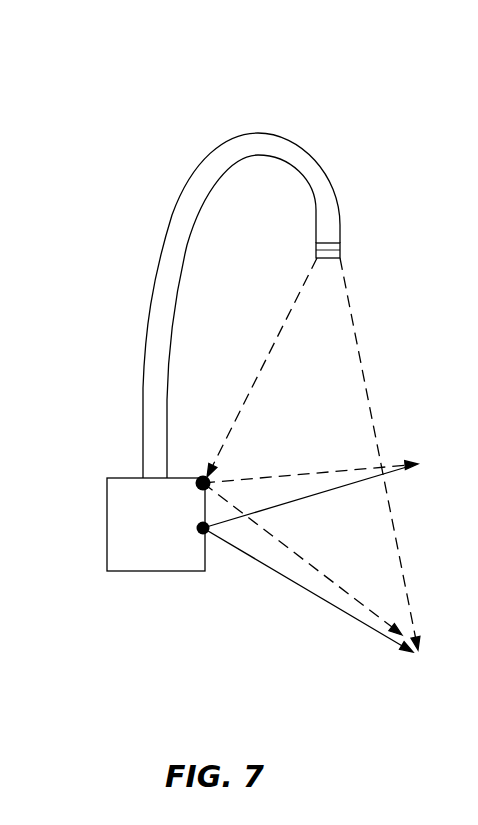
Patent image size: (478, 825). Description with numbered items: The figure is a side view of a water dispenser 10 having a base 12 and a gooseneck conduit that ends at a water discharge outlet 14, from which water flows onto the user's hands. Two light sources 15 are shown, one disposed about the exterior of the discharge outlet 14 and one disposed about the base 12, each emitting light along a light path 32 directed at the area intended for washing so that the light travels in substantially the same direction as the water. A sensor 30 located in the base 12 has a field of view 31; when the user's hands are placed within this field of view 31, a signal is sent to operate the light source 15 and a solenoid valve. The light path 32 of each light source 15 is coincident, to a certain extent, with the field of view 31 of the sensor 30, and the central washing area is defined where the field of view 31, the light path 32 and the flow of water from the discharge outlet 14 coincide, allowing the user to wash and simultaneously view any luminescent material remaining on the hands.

The water dispenser 10 is at (160, 120).
The base 12 is at (128, 522).
The water discharge outlet 14 is at (338, 259).
The light source 15 is at (337, 248).
The sensor 30 is at (201, 531).
The field of view 31 is at (316, 492).
The light path 32 is at (277, 340).